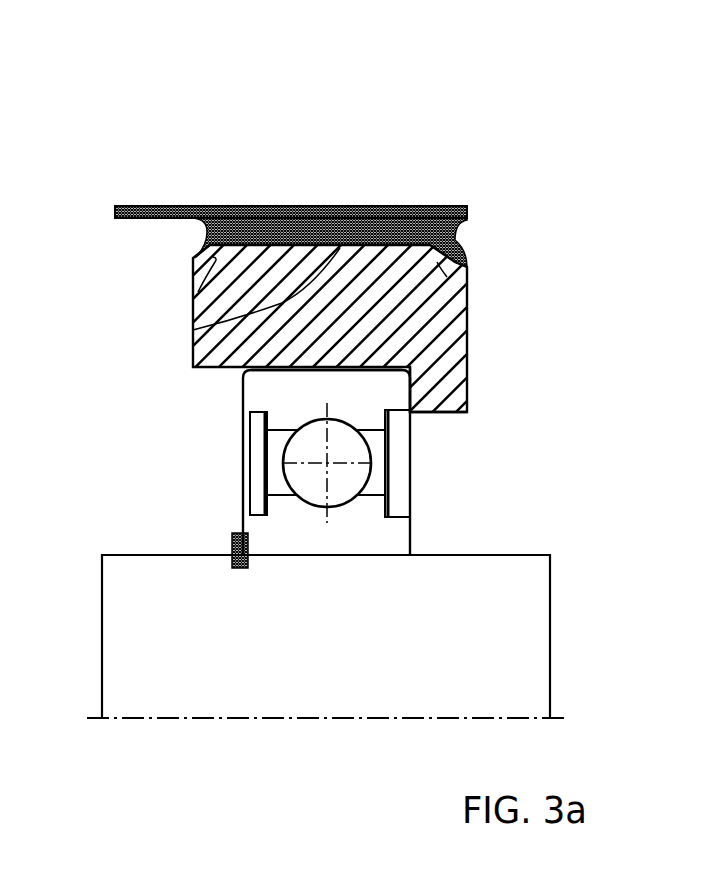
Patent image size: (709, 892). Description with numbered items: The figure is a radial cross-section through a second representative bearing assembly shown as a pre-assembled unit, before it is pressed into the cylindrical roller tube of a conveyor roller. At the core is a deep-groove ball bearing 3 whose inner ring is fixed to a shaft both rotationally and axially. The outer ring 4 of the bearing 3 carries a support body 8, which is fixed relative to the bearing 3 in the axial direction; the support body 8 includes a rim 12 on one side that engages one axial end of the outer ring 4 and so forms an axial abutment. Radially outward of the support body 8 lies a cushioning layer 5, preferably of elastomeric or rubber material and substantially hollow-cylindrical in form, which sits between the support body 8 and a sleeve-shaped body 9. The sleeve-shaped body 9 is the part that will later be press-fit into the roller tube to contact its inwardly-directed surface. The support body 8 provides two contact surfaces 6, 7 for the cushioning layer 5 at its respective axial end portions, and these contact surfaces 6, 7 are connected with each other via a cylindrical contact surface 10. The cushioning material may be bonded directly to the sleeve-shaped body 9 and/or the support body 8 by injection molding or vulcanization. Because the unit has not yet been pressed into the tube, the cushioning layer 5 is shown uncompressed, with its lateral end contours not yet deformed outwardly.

The deep-groove ball bearing 3 is at (428, 460).
The outer ring 4 is at (267, 390).
The cushioning layer 5 is at (457, 227).
The contact surface 6 is at (192, 298).
The contact surface 7 is at (447, 277).
The support body 8 is at (440, 307).
The sleeve-shaped body 9 is at (163, 213).
The cylindrical contact surface 10 is at (193, 330).
The rim 12 is at (463, 390).